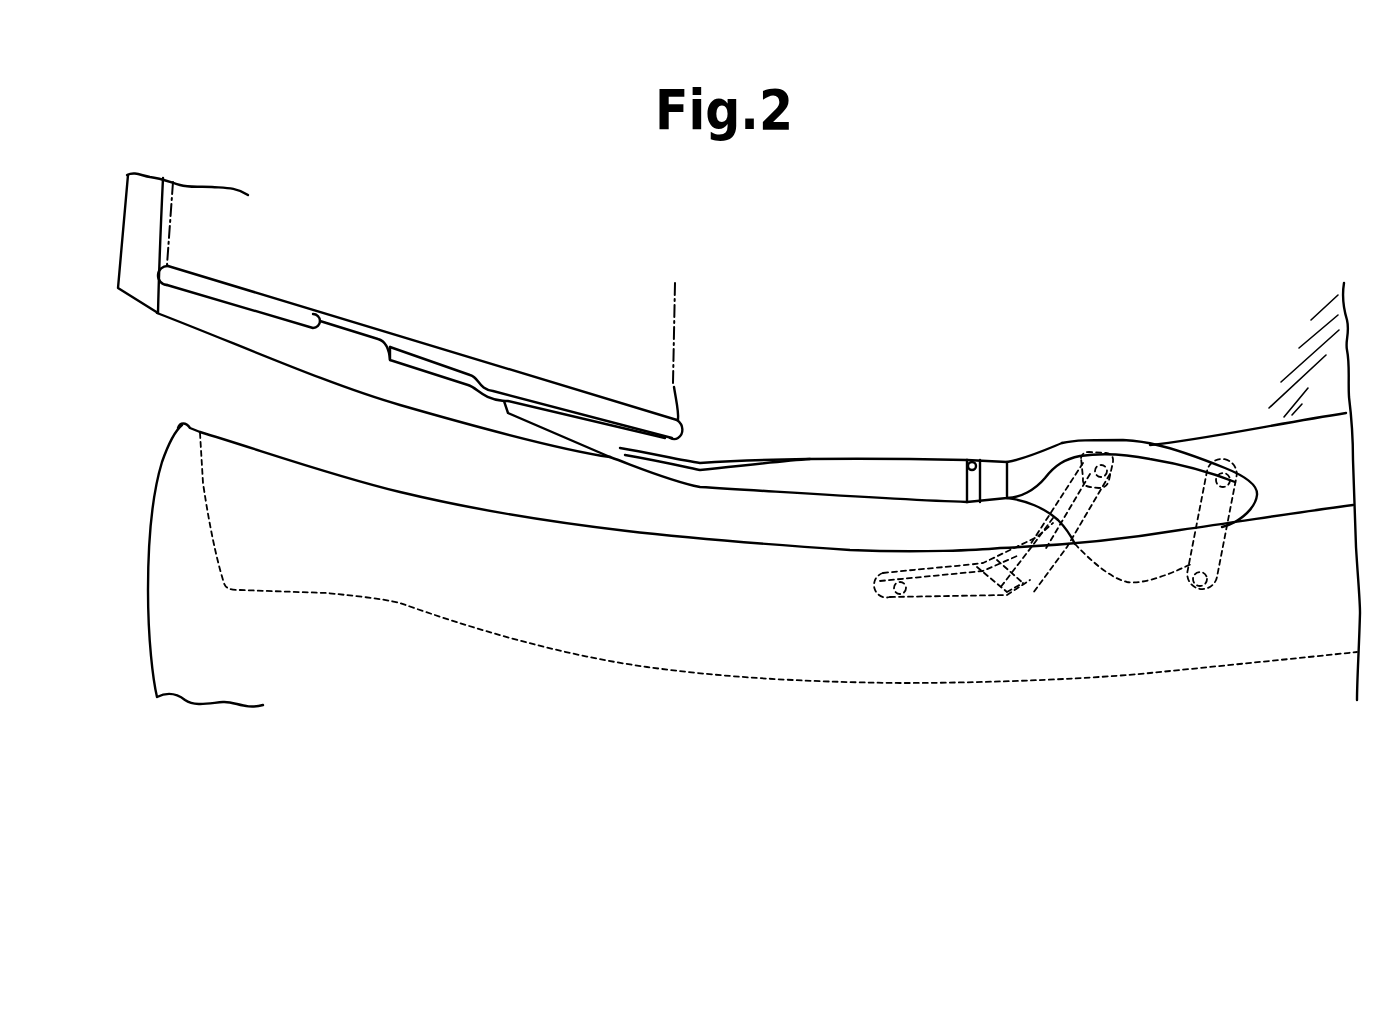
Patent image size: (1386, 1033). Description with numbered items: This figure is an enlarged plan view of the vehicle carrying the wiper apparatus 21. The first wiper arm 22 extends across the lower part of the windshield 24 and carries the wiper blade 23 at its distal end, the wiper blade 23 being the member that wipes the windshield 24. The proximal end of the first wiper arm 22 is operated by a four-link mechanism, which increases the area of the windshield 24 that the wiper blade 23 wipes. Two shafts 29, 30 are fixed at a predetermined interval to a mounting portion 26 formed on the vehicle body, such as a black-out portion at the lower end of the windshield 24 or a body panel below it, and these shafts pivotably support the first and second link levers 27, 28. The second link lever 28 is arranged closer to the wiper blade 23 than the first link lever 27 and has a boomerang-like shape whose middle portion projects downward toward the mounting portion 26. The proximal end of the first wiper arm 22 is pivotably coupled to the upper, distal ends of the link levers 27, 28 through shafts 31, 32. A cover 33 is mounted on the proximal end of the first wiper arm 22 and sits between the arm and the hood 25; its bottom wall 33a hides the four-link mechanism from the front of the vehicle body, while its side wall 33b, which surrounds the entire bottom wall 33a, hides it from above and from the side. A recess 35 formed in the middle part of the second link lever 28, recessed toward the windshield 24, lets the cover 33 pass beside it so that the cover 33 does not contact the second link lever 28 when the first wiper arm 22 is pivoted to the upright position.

The wiper apparatus 21 is at (806, 454).
The first wiper arm 22 is at (903, 463).
The wiper blade 23 is at (260, 298).
The windshield 24 is at (178, 235).
The hood 25 is at (178, 458).
The mounting portion 26 is at (778, 682).
The first link lever 27 is at (1215, 552).
The second link lever 28 is at (962, 600).
The shaft 29 is at (1198, 588).
The shaft 30 is at (900, 600).
The shaft 31 is at (1228, 462).
The shaft 32 is at (1113, 478).
The cover 33 is at (1066, 443).
The bottom wall 33a is at (1127, 585).
The side wall 33b is at (1139, 447).
The recess 35 is at (1032, 582).